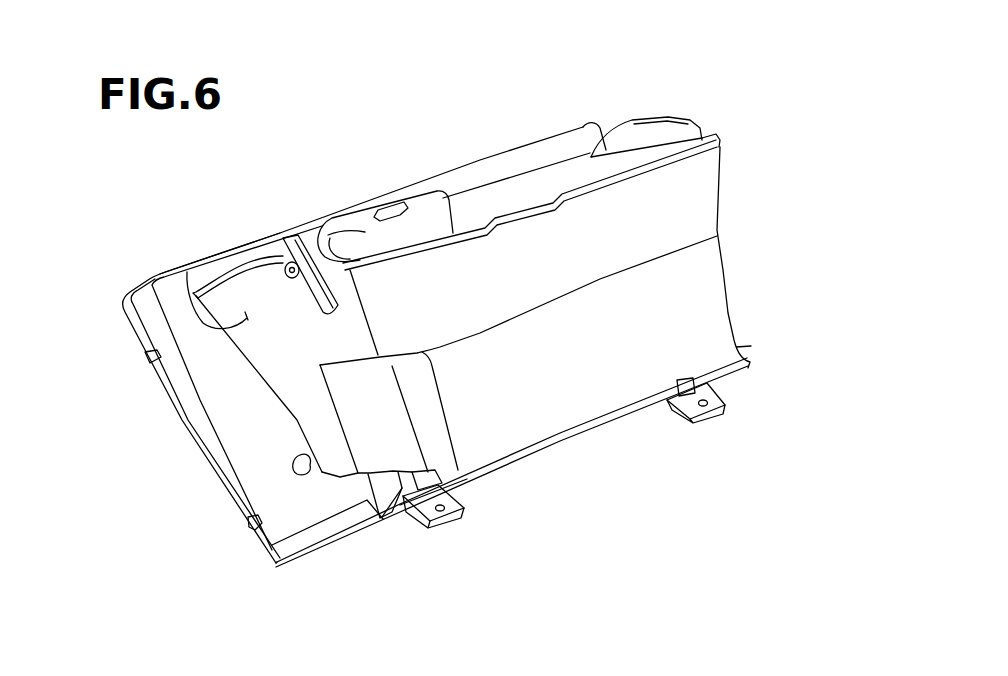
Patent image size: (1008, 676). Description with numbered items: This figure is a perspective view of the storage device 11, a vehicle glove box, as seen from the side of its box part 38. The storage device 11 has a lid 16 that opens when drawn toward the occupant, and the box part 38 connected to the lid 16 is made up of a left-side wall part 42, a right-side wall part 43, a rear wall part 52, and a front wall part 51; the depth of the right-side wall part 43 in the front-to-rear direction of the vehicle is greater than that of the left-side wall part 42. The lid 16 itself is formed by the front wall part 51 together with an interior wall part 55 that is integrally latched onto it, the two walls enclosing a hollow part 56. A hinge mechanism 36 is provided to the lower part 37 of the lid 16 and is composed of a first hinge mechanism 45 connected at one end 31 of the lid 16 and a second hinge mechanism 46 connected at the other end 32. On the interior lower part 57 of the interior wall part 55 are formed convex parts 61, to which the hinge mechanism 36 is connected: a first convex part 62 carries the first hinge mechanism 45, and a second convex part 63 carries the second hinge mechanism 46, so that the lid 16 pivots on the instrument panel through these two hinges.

The storage device 11 is at (367, 165).
The lid 16 is at (481, 153).
The one end 31 is at (183, 425).
The other end 32 is at (598, 125).
The hinge mechanism 36 is at (729, 509).
The lower part 37 is at (369, 528).
The box part 38 is at (736, 250).
The left-side wall part 42 is at (648, 144).
The right-side wall part 43 is at (190, 292).
The first hinge mechanism 45 is at (457, 517).
The second hinge mechanism 46 is at (700, 423).
The front wall part 51 is at (247, 430).
The rear wall part 52 is at (677, 300).
The interior wall part 55 is at (238, 512).
The hollow part 56 is at (308, 478).
The interior lower part 57 is at (294, 564).
The convex parts 61 is at (633, 489).
The first convex part 62 is at (430, 530).
The second convex part 63 is at (680, 376).